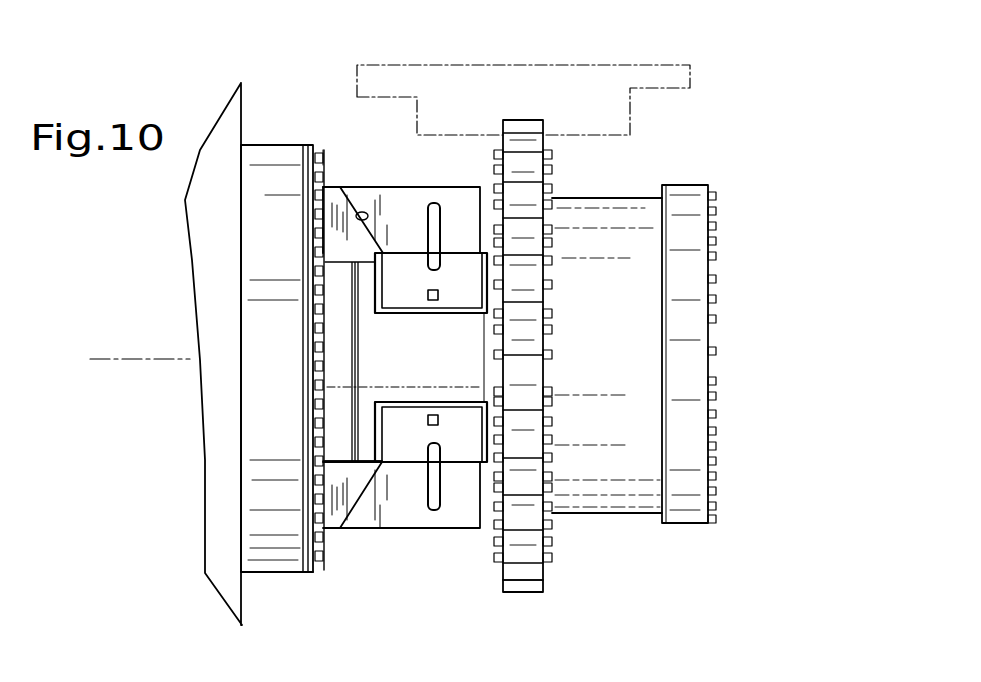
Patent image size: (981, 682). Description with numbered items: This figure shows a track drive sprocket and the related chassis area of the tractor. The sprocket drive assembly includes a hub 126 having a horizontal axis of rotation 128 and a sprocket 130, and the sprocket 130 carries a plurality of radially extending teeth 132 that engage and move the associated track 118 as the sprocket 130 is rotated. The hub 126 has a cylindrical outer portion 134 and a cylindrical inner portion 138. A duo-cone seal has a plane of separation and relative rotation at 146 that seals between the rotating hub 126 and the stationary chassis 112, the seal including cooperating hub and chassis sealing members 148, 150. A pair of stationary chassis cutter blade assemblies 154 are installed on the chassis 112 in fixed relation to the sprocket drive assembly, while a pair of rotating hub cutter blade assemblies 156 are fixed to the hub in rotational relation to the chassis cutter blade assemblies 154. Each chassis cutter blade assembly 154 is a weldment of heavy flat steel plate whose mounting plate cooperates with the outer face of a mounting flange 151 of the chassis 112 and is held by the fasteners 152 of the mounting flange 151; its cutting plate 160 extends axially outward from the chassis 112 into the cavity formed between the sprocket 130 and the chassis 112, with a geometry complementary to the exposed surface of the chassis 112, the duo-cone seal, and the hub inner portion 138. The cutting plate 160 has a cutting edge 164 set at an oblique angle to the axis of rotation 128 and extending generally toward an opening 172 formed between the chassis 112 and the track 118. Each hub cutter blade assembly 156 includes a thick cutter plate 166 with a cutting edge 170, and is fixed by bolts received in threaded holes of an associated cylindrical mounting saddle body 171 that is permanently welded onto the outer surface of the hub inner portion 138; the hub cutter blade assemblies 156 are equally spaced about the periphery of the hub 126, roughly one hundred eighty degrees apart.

The chassis 112 is at (230, 592).
The track 118 is at (473, 62).
The hub 126 is at (580, 527).
The axis of rotation 128 is at (722, 356).
The sprocket 130 is at (530, 595).
The teeth 132 is at (527, 118).
The outer portion of hub 134 is at (623, 515).
The inner portion of hub 138 is at (362, 462).
The plane of separation 146 is at (355, 312).
The hub sealing member 148 is at (320, 333).
The chassis sealing member 150 is at (330, 388).
The mounting flange 151 is at (267, 573).
The fasteners 152 is at (323, 165).
The chassis cutter blade assembly 154 is at (332, 185).
The hub cutter blade assembly 156 is at (362, 185).
The cutting plate 160 is at (340, 208).
The cutting edge 164 is at (358, 218).
The cutter plate 166 is at (410, 203).
The cutting edge 170 is at (380, 244).
The mounting saddle body 171 is at (397, 314).
The opening 172 is at (303, 93).